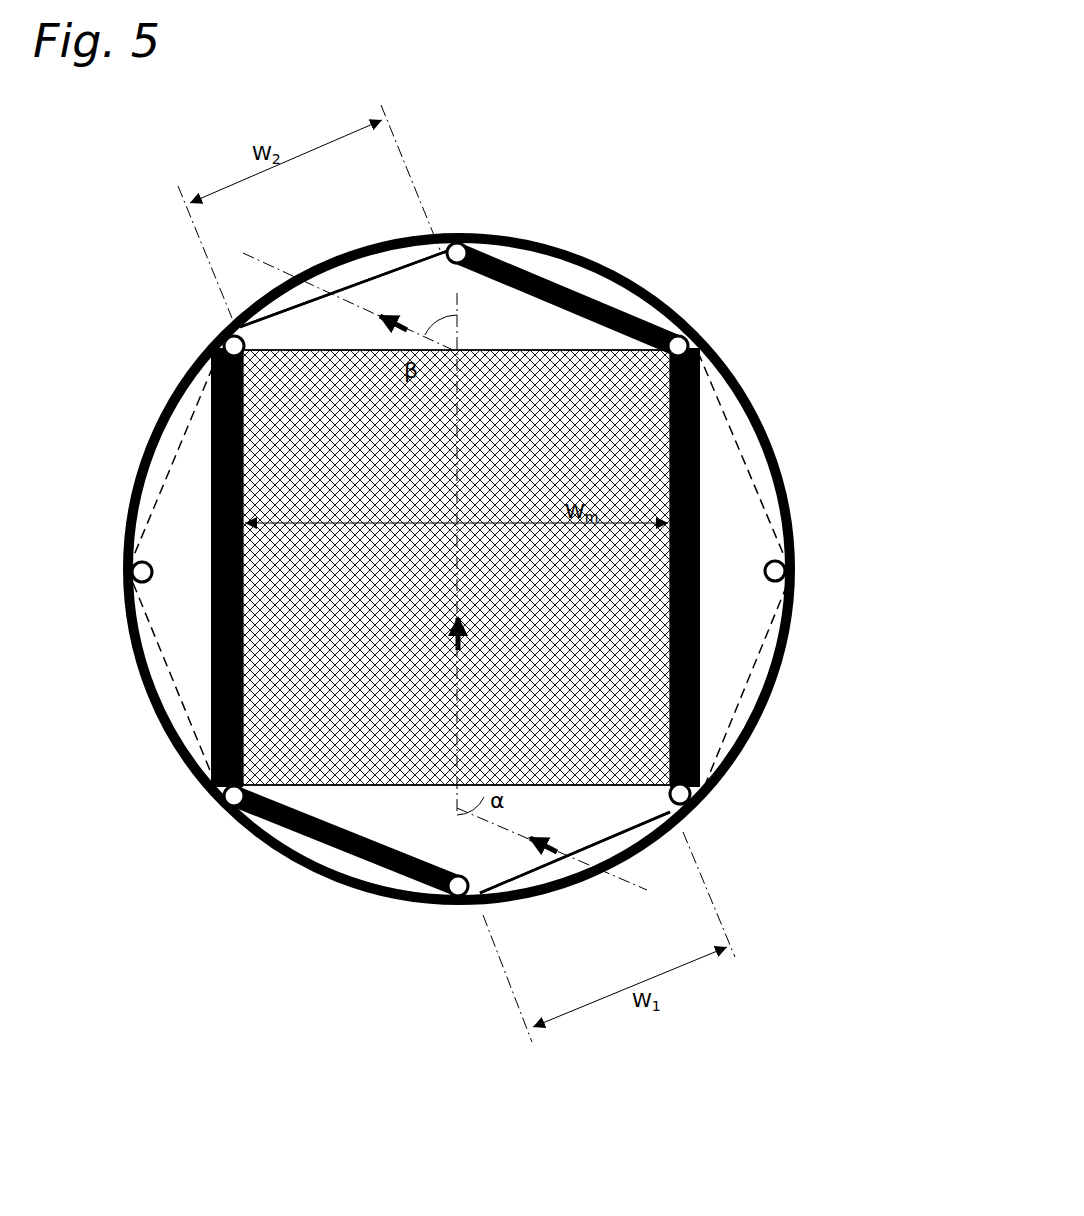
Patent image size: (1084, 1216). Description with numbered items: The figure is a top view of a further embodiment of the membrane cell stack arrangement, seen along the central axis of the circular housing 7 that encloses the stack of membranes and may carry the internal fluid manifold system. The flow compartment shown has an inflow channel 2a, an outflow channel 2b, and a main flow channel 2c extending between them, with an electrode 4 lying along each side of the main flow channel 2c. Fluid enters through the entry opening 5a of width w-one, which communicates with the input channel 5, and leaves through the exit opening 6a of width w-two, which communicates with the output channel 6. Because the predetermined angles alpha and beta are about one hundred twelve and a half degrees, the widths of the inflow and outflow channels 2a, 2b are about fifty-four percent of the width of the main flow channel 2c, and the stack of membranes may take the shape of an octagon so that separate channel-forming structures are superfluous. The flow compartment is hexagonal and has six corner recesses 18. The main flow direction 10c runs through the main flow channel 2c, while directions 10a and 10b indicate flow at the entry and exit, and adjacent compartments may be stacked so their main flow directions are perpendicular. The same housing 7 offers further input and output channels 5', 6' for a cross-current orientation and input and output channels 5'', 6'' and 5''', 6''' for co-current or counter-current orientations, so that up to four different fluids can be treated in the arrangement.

The inflow channel 2a is at (570, 803).
The outflow channel 2b is at (240, 300).
The main flow channel 2c is at (340, 647).
The electrode 4 is at (700, 440).
The input channel 5 is at (632, 894).
The entry opening 5a is at (630, 860).
The input channel 5' is at (134, 487).
The input channel 5'' is at (346, 907).
The input channel 5''' is at (792, 455).
The output channel 6 is at (377, 244).
The exit opening 6a is at (328, 338).
The output channel 6' is at (778, 689).
The output channel 6'' is at (589, 263).
The output channel 6''' is at (152, 735).
The housing 7 is at (595, 287).
The gas flow direction 10a is at (553, 857).
The gas flow direction 10b is at (397, 327).
The main flow direction 10c is at (458, 655).
The corner recess 18 is at (683, 338).